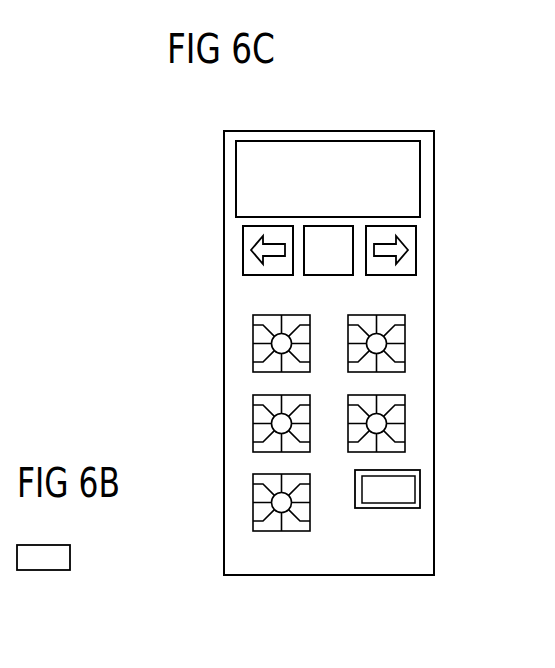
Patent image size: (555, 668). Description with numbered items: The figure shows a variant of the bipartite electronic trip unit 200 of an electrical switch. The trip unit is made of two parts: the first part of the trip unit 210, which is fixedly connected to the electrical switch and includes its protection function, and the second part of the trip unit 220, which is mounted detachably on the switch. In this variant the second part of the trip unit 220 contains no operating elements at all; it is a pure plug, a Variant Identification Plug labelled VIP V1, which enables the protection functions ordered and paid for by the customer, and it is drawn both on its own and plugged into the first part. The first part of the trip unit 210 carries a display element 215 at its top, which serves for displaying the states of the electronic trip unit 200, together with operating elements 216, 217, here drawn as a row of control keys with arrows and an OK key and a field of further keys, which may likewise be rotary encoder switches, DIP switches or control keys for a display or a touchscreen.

In FIG. 6C, the electronic trip unit 200 is at (434, 148).
In FIG. 6C, the first part of the trip unit 210 is at (420, 298).
In FIG. 6C, the display element 215 is at (236, 180).
In FIG. 6C, the operating elements 216 is at (251, 423).
In FIG. 6C, the operating elements 217 is at (417, 242).
In FIG. 6C, the second part of the trip unit 220 is at (418, 490).
In FIG. 6B, the second part of the trip unit 220 is at (71, 557).